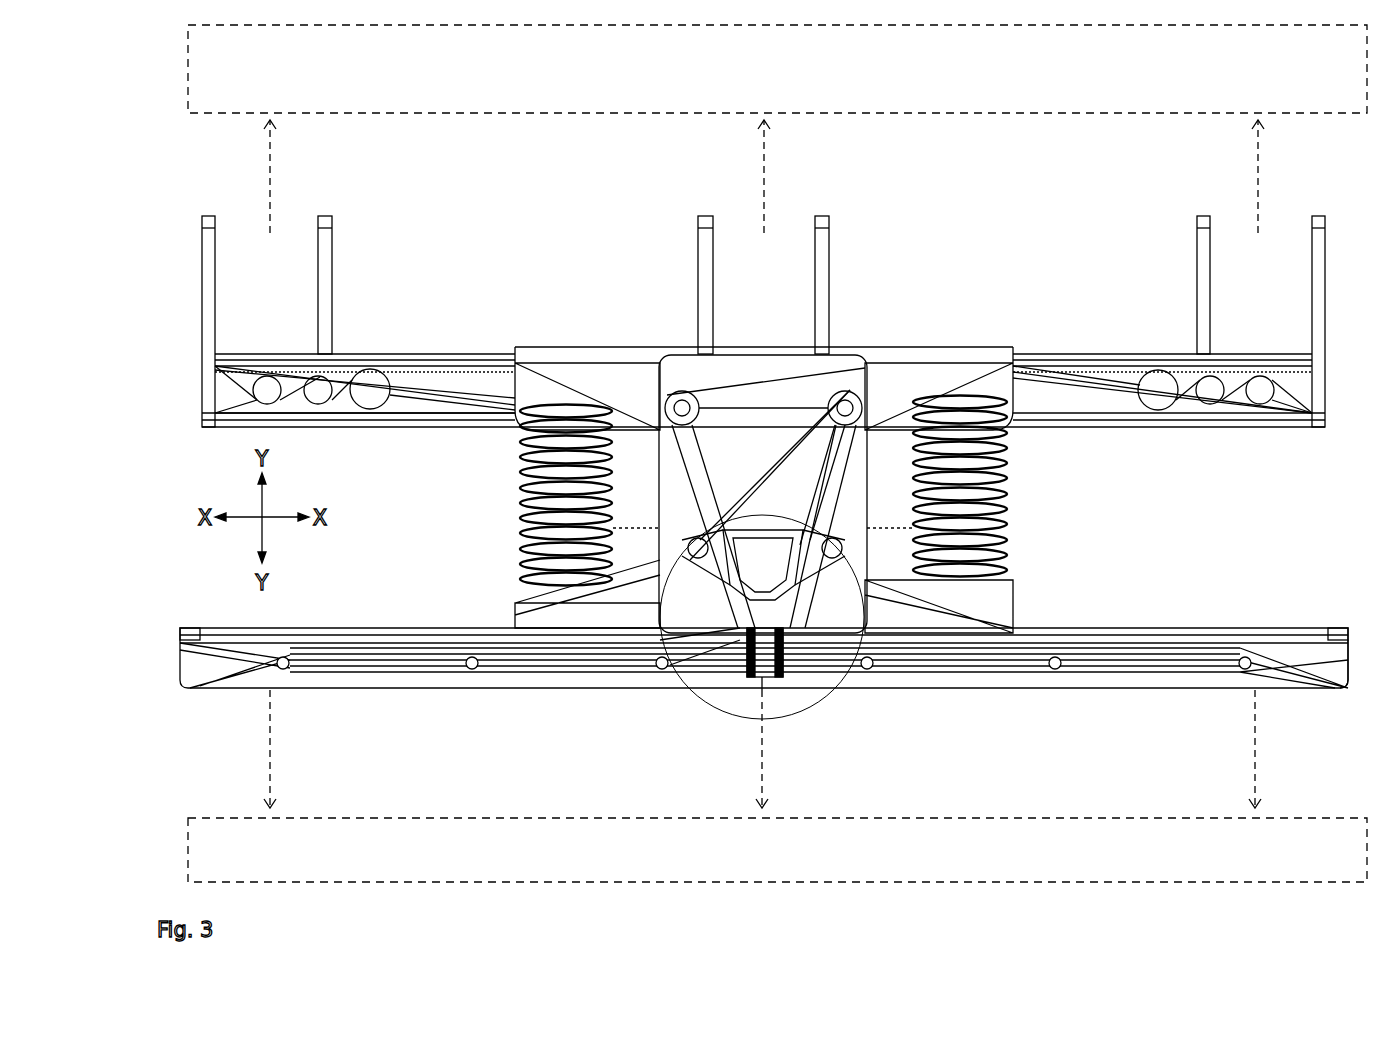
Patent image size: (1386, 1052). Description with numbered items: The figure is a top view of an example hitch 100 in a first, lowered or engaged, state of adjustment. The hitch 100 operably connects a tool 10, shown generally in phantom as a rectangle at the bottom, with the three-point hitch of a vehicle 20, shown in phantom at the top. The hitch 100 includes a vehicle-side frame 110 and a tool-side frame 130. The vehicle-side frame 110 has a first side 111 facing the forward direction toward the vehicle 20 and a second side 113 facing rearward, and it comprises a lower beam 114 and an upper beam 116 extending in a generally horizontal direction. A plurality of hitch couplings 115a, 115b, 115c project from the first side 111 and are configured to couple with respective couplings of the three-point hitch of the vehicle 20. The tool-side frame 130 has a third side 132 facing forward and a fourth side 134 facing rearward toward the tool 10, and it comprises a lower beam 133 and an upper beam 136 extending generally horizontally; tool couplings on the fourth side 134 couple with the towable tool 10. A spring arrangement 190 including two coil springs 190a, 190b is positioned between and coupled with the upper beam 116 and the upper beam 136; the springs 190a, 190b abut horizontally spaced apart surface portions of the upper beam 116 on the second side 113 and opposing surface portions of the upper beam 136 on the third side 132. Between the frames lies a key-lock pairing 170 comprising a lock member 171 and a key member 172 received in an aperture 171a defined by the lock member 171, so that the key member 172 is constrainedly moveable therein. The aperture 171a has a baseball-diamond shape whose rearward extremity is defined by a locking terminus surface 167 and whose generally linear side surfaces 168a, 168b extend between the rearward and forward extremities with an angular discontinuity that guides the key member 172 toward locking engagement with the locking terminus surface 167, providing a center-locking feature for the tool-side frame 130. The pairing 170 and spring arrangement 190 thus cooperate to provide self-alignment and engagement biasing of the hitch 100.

The vehicle 20 is at (764, 82).
The tool 10 is at (764, 862).
The hitch 100 is at (166, 430).
The vehicle-side frame 110 is at (463, 205).
The first side 111 is at (1152, 347).
The second side 113 is at (1220, 437).
The lower beam 114 is at (1083, 350).
The hitch coupling 115a is at (196, 241).
The hitch coupling 115b is at (1190, 241).
The hitch coupling 115c is at (691, 241).
The upper beam 116 is at (585, 340).
The tool-side frame 130 is at (783, 683).
The third side 132 is at (1138, 622).
The lower beam 133 is at (1332, 657).
The fourth side 134 is at (1162, 700).
The upper beam 136 is at (955, 685).
The locking terminus surface 167 is at (762, 678).
The side surface 168a is at (728, 607).
The side surface 168b is at (818, 578).
The key-lock pairing 170 is at (763, 578).
The lock member 171 is at (795, 682).
The aperture 171a is at (655, 665).
The key member 172 is at (762, 548).
The spring arrangement 190 is at (760, 491).
The spring 190a is at (518, 530).
The spring 190b is at (1012, 535).